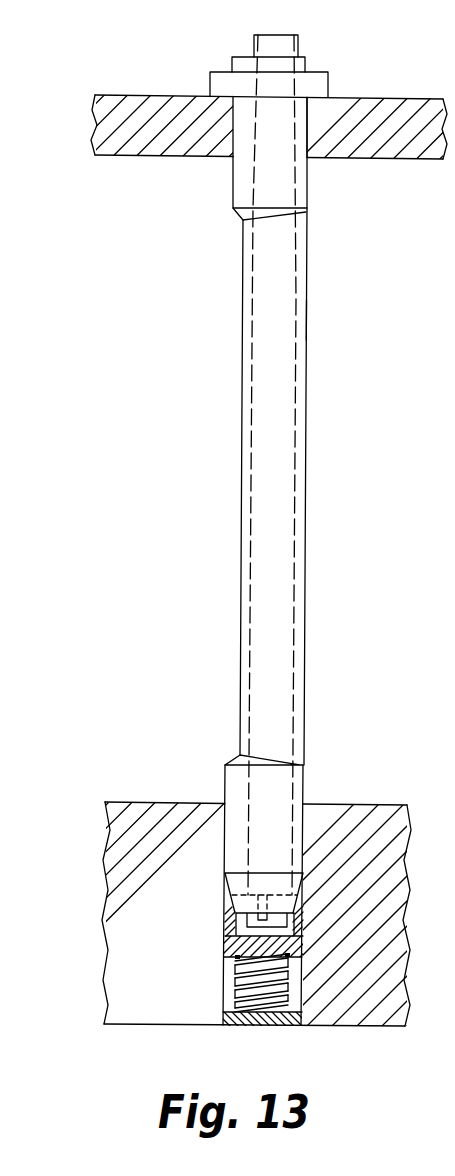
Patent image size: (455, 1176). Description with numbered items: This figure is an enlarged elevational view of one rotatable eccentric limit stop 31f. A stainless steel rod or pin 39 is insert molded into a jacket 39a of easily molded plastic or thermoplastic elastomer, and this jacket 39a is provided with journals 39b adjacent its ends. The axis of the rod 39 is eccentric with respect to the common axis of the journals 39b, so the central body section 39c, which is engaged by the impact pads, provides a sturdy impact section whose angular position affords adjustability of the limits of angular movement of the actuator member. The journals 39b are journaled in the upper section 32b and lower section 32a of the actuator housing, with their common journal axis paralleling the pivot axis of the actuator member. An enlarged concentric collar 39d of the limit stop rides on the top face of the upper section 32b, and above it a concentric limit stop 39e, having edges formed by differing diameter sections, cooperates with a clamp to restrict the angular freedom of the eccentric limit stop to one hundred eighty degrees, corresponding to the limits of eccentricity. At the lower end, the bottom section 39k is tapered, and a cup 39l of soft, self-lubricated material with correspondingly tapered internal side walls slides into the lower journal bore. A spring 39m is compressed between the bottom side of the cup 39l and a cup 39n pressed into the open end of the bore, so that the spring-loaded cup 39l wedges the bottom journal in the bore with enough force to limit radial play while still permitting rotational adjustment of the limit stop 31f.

The rod 39 is at (250, 38).
The concentric limit stop 39e is at (311, 63).
The enlarged concentric collar 39d is at (208, 82).
The upper section of the actuator housing 32b is at (171, 148).
The jacket 39a is at (310, 197).
The journals 39b is at (238, 153).
The central body section 39c is at (308, 397).
The limit stop 31f is at (308, 320).
The lower section of the actuator housing 32a is at (135, 800).
The bottom section 39k is at (269, 878).
The cup 39l is at (294, 935).
The spring 39m is at (294, 998).
The cup 39n is at (238, 1028).